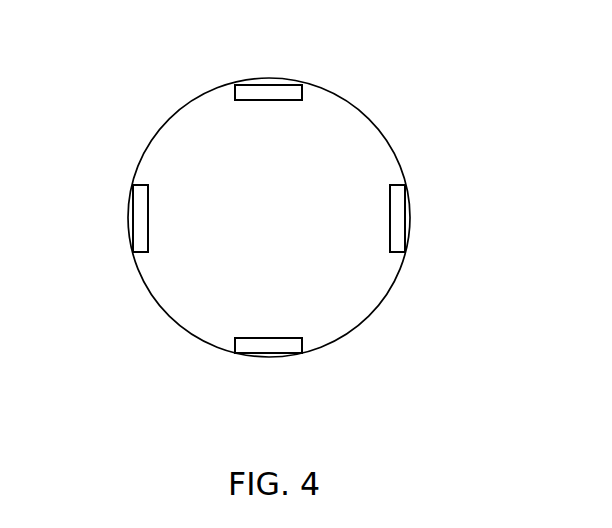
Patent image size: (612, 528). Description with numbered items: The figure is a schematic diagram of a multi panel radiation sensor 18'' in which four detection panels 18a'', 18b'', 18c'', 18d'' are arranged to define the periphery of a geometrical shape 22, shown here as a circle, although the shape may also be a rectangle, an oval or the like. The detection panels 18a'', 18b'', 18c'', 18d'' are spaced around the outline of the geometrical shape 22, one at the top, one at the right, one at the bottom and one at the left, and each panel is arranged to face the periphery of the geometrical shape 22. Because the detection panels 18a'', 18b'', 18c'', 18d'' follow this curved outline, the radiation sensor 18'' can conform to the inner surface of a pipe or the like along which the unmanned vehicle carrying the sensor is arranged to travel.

The radiation sensor 18'' is at (475, 90).
The detection panel 18a'' is at (278, 62).
The detection panel 18b'' is at (447, 218).
The detection panel 18c'' is at (281, 383).
The detection panel 18d'' is at (91, 217).
The geometrical shape 22 is at (177, 323).